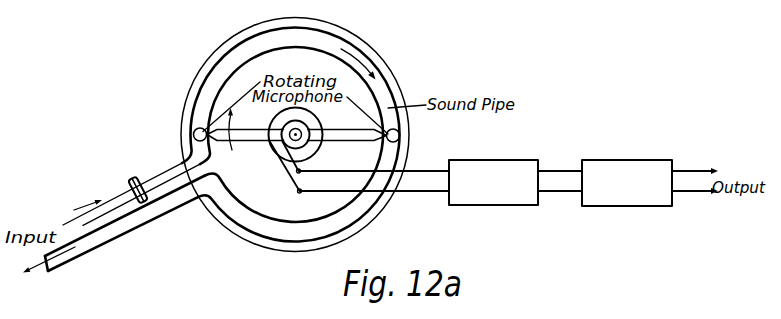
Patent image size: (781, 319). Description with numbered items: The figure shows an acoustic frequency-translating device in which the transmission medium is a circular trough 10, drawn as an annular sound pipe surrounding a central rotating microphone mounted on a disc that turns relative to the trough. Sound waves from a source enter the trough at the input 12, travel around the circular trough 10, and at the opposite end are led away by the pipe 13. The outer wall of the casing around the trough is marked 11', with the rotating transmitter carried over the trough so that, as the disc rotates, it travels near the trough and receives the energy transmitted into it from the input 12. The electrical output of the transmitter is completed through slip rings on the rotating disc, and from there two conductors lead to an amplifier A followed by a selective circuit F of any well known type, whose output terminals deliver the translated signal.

The circular trough 10 is at (238, 57).
The outer casing of sound pipe 11' is at (295, 140).
The input 12 is at (130, 182).
The pipe 13 is at (97, 240).
The amplifier A is at (493, 171).
The selective circuit F is at (627, 173).